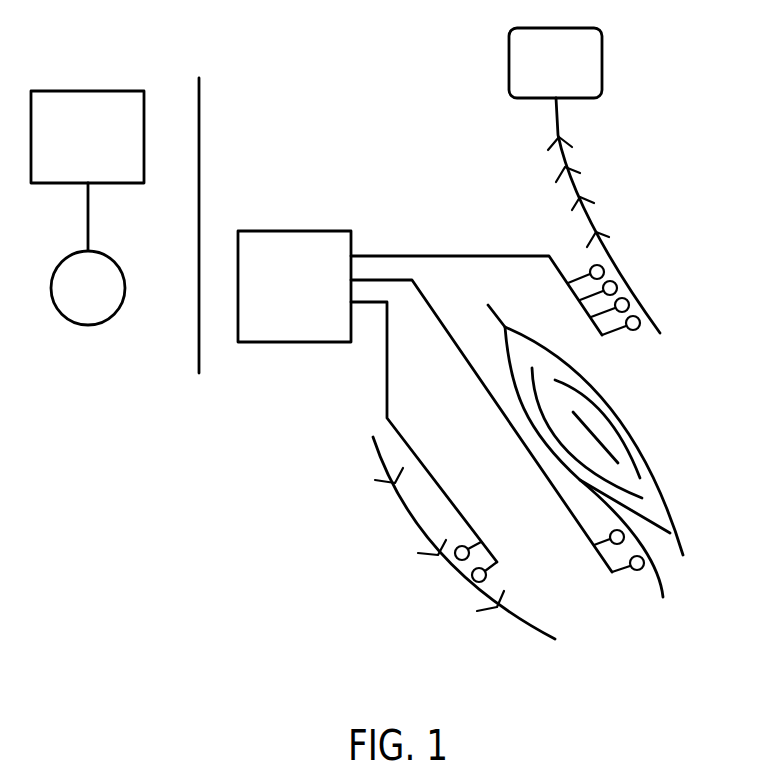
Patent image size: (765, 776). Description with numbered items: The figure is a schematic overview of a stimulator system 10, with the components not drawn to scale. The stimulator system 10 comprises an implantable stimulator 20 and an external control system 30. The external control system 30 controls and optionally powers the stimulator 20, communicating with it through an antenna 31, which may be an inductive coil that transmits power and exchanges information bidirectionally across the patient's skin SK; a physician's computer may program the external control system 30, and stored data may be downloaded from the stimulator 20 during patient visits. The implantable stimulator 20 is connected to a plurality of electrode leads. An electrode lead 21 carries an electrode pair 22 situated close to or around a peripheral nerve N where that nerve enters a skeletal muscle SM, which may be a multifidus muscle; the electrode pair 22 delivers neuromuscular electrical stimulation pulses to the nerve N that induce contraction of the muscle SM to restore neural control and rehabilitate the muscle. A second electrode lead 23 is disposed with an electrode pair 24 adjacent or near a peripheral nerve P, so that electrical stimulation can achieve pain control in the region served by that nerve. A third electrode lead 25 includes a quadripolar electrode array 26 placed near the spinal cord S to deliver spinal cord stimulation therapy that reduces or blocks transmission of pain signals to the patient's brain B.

The stimulator system 10 is at (305, 80).
The implantable stimulator 20 is at (309, 301).
The electrode lead 21 is at (492, 395).
The electrode pair 22 is at (636, 570).
The electrode lead 23 is at (387, 390).
The electrode pair 24 is at (486, 575).
The electrode lead 25 is at (447, 256).
The quadripolar electrode array 26 is at (634, 330).
The external control system 30 is at (102, 151).
The antenna 31 is at (102, 301).
The skin SK is at (199, 172).
The brain B is at (602, 60).
The spinal cord S is at (565, 155).
The skeletal muscle SM is at (613, 425).
The peripheral nerve N is at (663, 577).
The peripheral nerve P is at (517, 620).